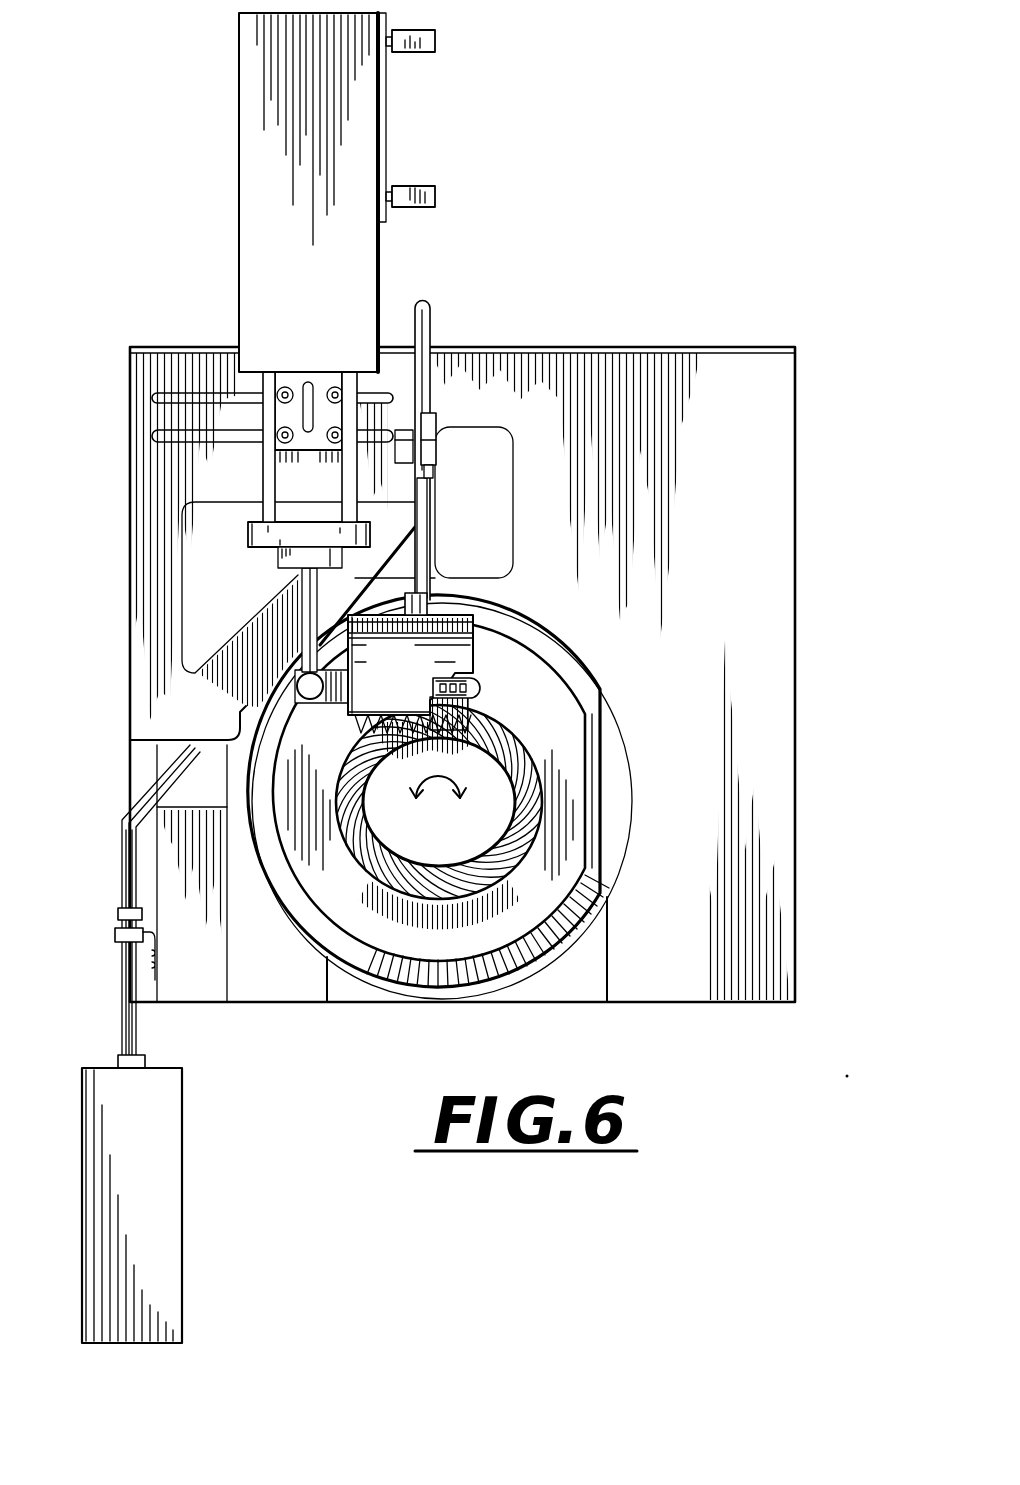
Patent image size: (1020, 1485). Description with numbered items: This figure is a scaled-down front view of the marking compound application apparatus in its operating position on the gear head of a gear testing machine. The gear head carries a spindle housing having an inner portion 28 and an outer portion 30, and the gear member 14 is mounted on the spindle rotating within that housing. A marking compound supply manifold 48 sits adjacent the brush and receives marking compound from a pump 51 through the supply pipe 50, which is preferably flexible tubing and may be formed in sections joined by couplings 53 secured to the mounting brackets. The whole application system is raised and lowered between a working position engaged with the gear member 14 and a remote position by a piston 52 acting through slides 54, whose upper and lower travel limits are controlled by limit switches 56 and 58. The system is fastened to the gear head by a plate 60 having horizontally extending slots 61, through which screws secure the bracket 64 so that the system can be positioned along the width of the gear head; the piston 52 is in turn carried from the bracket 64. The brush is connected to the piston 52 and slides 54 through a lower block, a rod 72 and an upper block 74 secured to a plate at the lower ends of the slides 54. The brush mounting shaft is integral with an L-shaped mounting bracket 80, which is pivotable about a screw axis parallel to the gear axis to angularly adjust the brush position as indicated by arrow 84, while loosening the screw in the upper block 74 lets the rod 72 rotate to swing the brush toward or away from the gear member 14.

The gear member 14 is at (532, 738).
The inner portion of spindle housing 28 is at (600, 859).
The outer portion of spindle housing 30 is at (586, 803).
The marking compound supply manifold 48 is at (447, 600).
The supply pipe 50 is at (427, 302).
The pump 51 is at (182, 1110).
The piston 52 is at (248, 152).
The couplings 53 is at (436, 440).
The slides 54 is at (345, 482).
The limit switch 56 is at (412, 52).
The limit switch 58 is at (425, 188).
The plate 60 is at (210, 360).
The horizontally extending slots 61 is at (150, 433).
The bracket 64 is at (300, 380).
The rod 72 is at (303, 612).
The upper block 74 is at (278, 560).
The L-shaped mounting bracket 80 is at (338, 682).
The arrow 84 is at (470, 672).